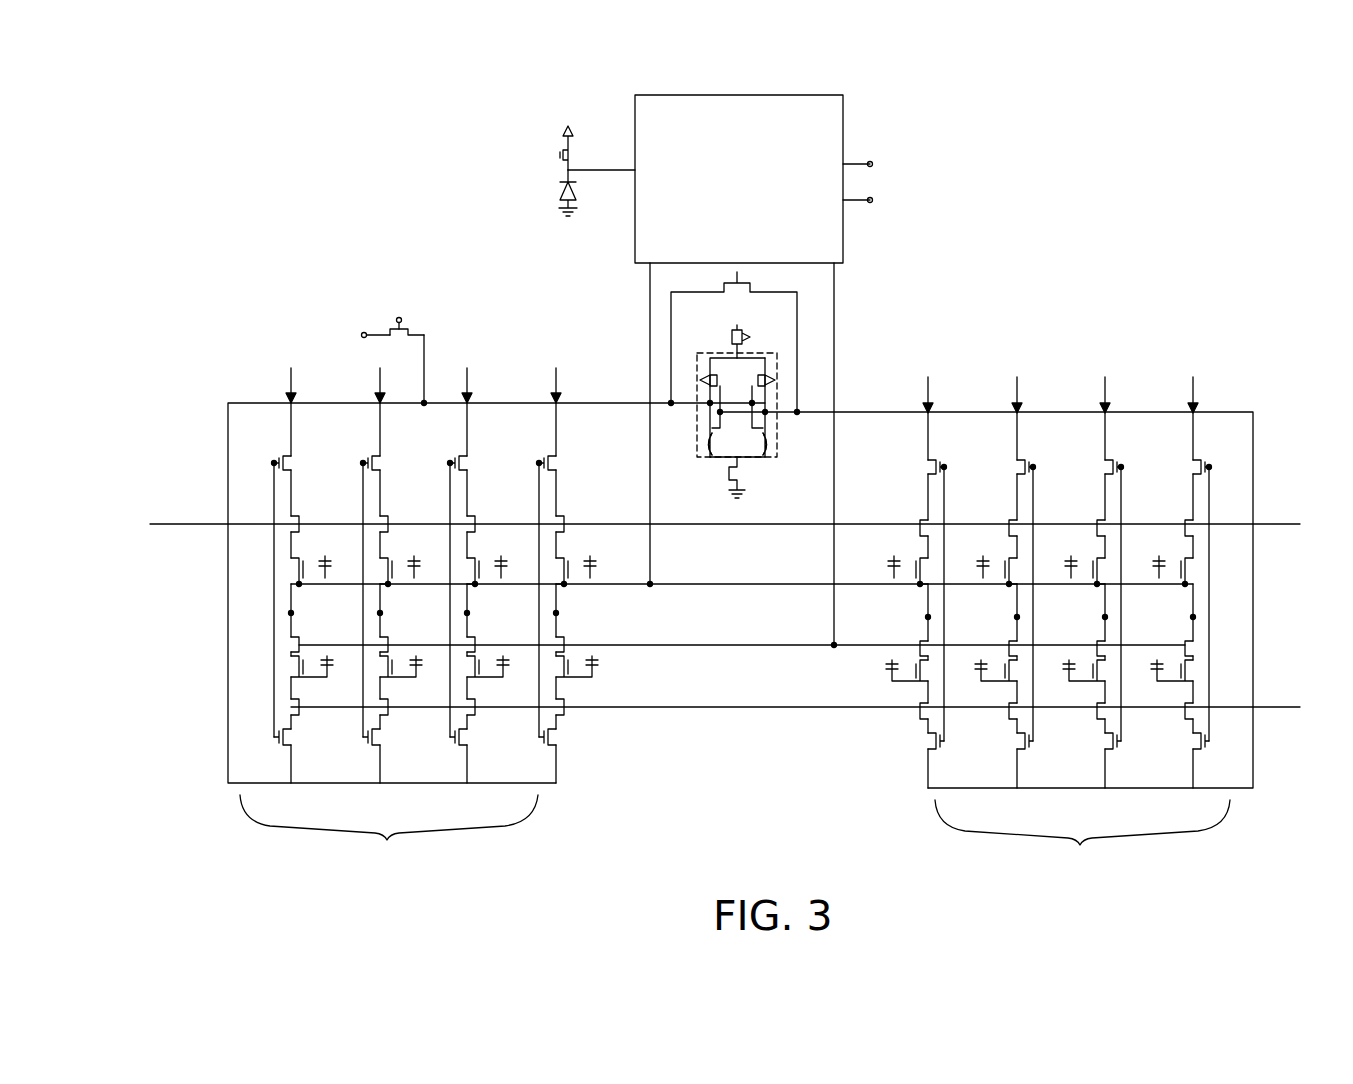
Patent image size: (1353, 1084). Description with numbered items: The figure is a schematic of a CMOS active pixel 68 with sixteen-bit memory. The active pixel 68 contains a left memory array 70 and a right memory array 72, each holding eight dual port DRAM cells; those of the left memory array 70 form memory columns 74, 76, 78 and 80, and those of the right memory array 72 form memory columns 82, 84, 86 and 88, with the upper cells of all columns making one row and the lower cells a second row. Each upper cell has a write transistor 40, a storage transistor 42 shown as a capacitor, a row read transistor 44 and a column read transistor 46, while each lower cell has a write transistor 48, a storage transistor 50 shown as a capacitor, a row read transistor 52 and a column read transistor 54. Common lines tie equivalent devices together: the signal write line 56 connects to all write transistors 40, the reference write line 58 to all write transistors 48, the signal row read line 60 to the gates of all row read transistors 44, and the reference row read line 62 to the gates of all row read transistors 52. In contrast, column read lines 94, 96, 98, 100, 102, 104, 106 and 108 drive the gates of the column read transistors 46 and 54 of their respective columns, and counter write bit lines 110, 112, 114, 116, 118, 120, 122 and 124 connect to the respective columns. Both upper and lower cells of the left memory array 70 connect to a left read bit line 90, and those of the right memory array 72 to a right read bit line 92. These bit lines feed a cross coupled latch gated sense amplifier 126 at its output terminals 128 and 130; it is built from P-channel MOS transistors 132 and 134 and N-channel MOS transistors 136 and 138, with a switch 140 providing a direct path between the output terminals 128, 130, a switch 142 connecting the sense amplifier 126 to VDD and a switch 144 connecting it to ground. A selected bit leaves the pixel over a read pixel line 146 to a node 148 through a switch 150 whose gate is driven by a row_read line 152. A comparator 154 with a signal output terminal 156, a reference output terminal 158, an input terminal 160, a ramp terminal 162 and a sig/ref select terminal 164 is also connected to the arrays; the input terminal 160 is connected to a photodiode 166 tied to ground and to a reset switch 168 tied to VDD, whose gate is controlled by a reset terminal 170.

The write transistor 40 is at (741, 570).
The storage transistor 42 is at (331, 560).
The row read transistor 44 is at (301, 518).
The column read transistor 46 is at (292, 458).
The write transistor 48 is at (301, 640).
The storage transistor 50 is at (329, 665).
The row read transistor 52 is at (296, 698).
The column read transistor 54 is at (292, 742).
The signal write line 56 is at (714, 587).
The reference write line 58 is at (700, 647).
The signal row read line 60 is at (1300, 524).
The reference row read line 62 is at (1292, 707).
The active pixel 68 is at (1092, 182).
The left memory array 70 is at (389, 832).
The right memory array 72 is at (1082, 838).
The memory column 74 is at (290, 562).
The memory column 76 is at (379, 562).
The memory column 78 is at (466, 562).
The memory column 80 is at (555, 562).
The memory column 82 is at (927, 569).
The memory column 84 is at (1016, 569).
The memory column 86 is at (1104, 569).
The memory column 88 is at (1192, 569).
The left read bit line 90 is at (248, 400).
The right read bit line 92 is at (1232, 412).
The column read line 94 is at (274, 462).
The column read line 96 is at (363, 462).
The column read line 98 is at (450, 462).
The column read line 100 is at (539, 462).
The column read line 102 is at (944, 465).
The column read line 104 is at (1033, 465).
The column read line 106 is at (1121, 465).
The column read line 108 is at (1209, 465).
The counter write bit line 110 is at (294, 613).
The counter write bit line 112 is at (383, 613).
The counter write bit line 114 is at (470, 613).
The counter write bit line 116 is at (559, 613).
The counter write bit line 118 is at (925, 617).
The counter write bit line 120 is at (1014, 617).
The counter write bit line 122 is at (1102, 617).
The counter write bit line 124 is at (1190, 617).
The sense amplifier 126 is at (778, 397).
The output terminal 128 is at (676, 404).
The output terminal 130 is at (787, 412).
The P-channel MOS transistor 132 is at (707, 376).
The P-channel MOS transistor 134 is at (768, 376).
The N-channel MOS transistor 136 is at (712, 455).
The N-channel MOS transistor 138 is at (765, 455).
The switch 140 is at (752, 287).
The switch 142 is at (735, 337).
The switch 144 is at (738, 478).
The read pixel line 146 is at (425, 345).
The node 148 is at (354, 335).
The switch 150 is at (405, 328).
The row_read line 152 is at (397, 309).
The comparator 154 is at (843, 96).
The signal output terminal 156 is at (650, 315).
The reference output terminal 158 is at (834, 315).
The input terminal 160 is at (603, 172).
The ramp terminal 162 is at (872, 162).
The sig/ref select terminal 164 is at (872, 198).
The photodiode 166 is at (560, 200).
The reset switch 168 is at (573, 156).
The reset terminal 170 is at (565, 160).